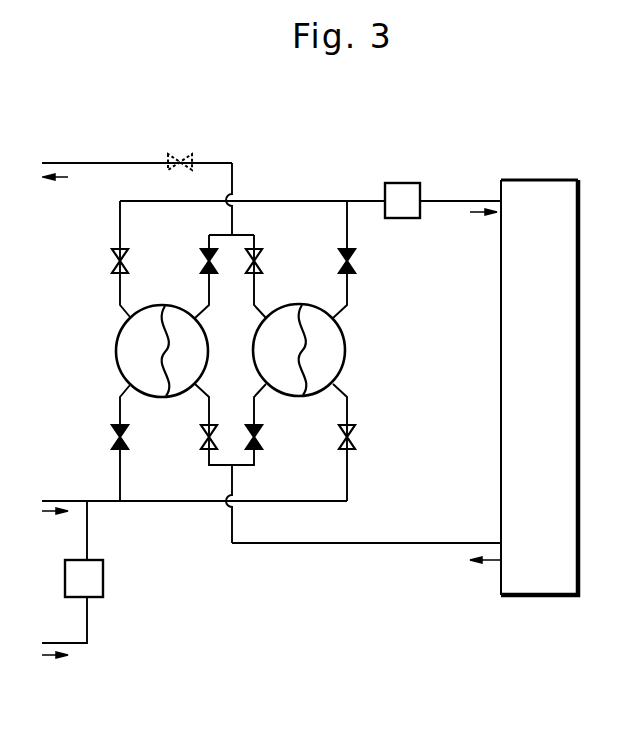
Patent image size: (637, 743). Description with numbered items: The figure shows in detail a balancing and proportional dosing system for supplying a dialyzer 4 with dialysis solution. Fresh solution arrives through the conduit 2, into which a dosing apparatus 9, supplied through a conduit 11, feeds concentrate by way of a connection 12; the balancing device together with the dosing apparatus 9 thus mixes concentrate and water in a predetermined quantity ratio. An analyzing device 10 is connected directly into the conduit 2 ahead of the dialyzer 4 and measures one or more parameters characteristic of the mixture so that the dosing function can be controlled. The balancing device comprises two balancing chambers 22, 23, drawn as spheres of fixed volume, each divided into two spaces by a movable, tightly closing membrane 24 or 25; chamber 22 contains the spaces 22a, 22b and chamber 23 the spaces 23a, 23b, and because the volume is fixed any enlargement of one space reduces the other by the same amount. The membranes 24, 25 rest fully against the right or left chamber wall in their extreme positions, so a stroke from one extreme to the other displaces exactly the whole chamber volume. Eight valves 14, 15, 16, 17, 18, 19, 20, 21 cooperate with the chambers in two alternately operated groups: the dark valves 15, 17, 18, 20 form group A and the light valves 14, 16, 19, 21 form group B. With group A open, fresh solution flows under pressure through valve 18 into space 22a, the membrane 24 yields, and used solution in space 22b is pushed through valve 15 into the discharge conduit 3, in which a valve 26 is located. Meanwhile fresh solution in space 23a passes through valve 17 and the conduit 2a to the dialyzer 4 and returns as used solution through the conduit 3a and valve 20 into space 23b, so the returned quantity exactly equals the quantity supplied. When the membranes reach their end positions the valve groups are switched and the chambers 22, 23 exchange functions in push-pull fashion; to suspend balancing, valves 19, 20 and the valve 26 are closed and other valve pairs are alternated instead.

The conduit 2 is at (163, 502).
The conduit 2a is at (443, 201).
The discharge conduit 3 is at (85, 160).
The conduit 3a is at (413, 547).
The dialyzer 4 is at (540, 573).
The dosing apparatus 9 is at (97, 577).
The analyzing device 10 is at (403, 191).
The conduit 11 is at (87, 631).
The connection 12 is at (89, 532).
The valve 14 is at (112, 262).
The valve 15 is at (201, 262).
The valve 16 is at (262, 262).
The valve 17 is at (351, 262).
The valve 18 is at (112, 447).
The valve 19 is at (203, 445).
The valve 20 is at (262, 445).
The valve 21 is at (358, 440).
The balancing chamber 22 is at (139, 351).
The space 22a is at (127, 367).
The space 22b is at (197, 323).
The balancing chamber 23 is at (313, 356).
The space 23a is at (343, 348).
The space 23b is at (262, 347).
The membrane 24 is at (158, 313).
The membrane 25 is at (288, 301).
The valve 26 is at (184, 160).